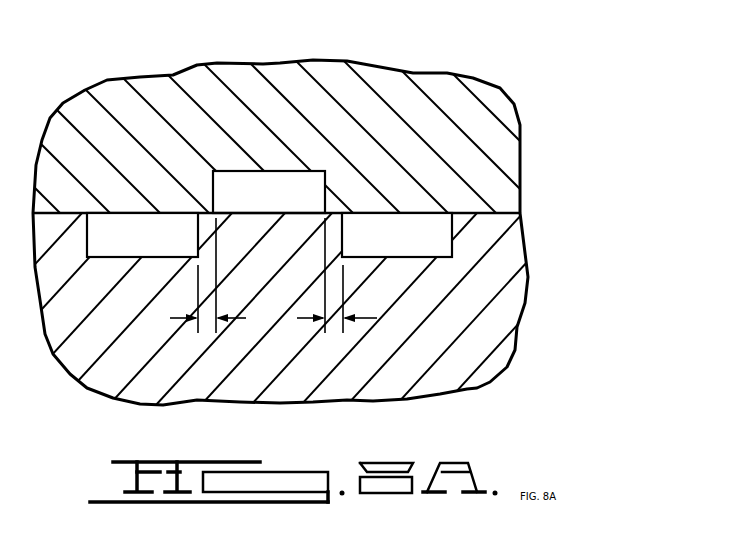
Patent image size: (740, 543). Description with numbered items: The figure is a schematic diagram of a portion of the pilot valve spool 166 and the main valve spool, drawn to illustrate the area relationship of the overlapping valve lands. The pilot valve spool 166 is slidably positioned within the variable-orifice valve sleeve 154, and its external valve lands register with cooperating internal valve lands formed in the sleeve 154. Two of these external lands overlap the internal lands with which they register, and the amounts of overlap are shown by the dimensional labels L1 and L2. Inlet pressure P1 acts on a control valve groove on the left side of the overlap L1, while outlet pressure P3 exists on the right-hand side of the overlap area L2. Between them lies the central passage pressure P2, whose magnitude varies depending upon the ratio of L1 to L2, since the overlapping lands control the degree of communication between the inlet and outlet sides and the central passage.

The pilot valve spool 166 is at (297, 114).
The variable-orifice valve sleeve 154 is at (335, 309).
The inlet pressure P1 is at (142, 235).
The central passage pressure P2 is at (269, 192).
The outlet pressure P3 is at (397, 235).
The overlap dimension of first land L1 is at (188, 276).
The overlap dimension of second land L2 is at (352, 276).